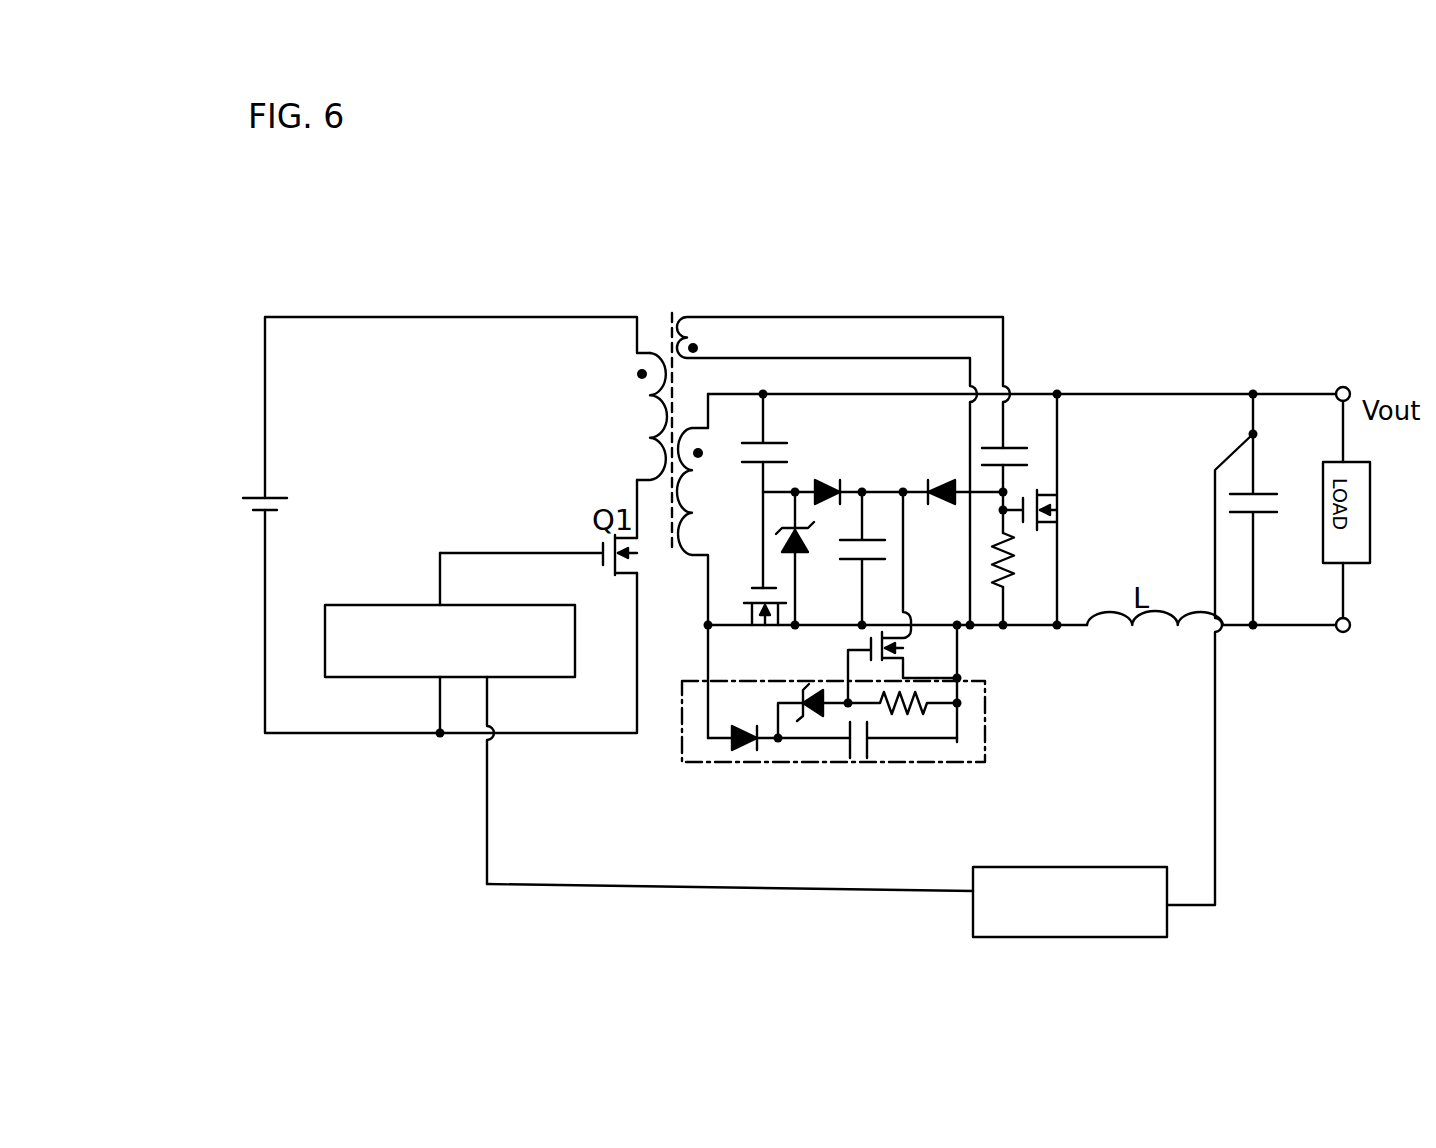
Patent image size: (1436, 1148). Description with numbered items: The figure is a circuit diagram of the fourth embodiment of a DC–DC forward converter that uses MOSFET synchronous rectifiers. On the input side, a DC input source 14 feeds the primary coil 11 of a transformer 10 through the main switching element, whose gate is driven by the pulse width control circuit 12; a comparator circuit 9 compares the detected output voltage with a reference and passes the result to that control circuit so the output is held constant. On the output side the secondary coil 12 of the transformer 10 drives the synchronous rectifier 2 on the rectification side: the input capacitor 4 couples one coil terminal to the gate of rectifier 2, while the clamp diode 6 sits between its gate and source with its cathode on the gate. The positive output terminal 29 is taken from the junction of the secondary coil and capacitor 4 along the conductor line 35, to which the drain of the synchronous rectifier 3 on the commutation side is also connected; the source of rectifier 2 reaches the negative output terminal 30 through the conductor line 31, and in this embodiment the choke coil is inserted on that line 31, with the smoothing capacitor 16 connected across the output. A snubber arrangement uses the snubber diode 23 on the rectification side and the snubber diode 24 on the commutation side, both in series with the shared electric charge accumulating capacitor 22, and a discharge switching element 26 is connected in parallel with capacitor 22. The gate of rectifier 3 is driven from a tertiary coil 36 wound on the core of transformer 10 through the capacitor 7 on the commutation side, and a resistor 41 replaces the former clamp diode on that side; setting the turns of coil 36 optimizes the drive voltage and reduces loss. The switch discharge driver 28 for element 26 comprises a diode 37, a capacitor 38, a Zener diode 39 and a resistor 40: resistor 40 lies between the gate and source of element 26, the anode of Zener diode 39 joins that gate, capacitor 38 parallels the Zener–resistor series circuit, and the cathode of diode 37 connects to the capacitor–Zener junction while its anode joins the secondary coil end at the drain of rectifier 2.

The synchronous rectifier on the rectification side 2 is at (757, 636).
The synchronous rectifier on the commutation side 3 is at (1060, 505).
The input capacitor on the rectification side 4 is at (788, 452).
The clamp diode on the rectification side 6 is at (808, 550).
The capacitor on the commutation side 7 is at (1028, 456).
The comparator circuit 9 is at (1060, 866).
The transformer 10 is at (798, 450).
The primary coil 11 is at (667, 415).
The secondary coil 12 is at (402, 604).
The DC input source 14 is at (258, 495).
The smoothing capacitor 16 is at (1278, 505).
The electric charge accumulating capacitor 22 is at (838, 548).
The snubber diode on the rectification side 23 is at (830, 485).
The snubber diode on the commutation side 24 is at (942, 480).
The discharge switching element 26 is at (903, 648).
The switch discharge driver 28 is at (676, 750).
The output terminal (+ side) 29 is at (1343, 387).
The output terminal (- side) 30 is at (1350, 632).
The conductor line 31 is at (985, 628).
The conductor line 35 is at (1088, 393).
The tertiary coil 36 is at (688, 318).
The diode 37 is at (742, 728).
The capacitor 38 is at (870, 760).
The Zener diode 39 is at (812, 697).
The resistor 40 is at (913, 715).
The resistor 41 is at (1015, 560).